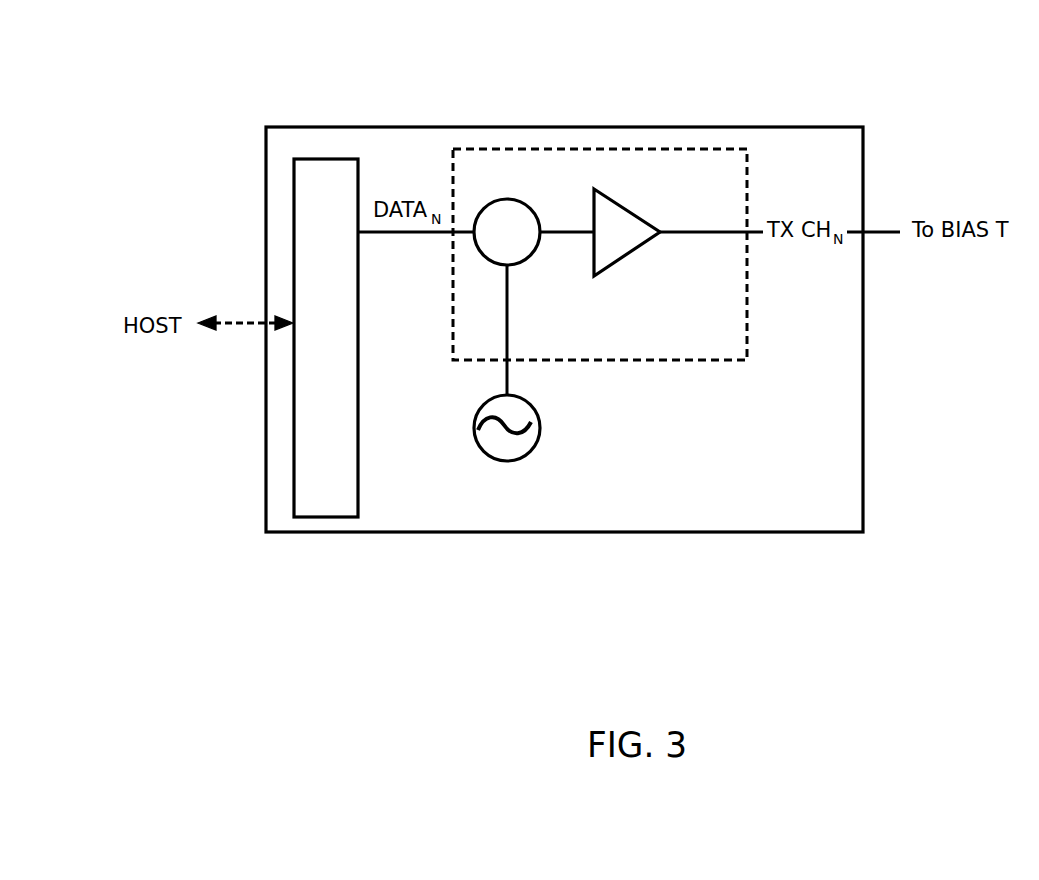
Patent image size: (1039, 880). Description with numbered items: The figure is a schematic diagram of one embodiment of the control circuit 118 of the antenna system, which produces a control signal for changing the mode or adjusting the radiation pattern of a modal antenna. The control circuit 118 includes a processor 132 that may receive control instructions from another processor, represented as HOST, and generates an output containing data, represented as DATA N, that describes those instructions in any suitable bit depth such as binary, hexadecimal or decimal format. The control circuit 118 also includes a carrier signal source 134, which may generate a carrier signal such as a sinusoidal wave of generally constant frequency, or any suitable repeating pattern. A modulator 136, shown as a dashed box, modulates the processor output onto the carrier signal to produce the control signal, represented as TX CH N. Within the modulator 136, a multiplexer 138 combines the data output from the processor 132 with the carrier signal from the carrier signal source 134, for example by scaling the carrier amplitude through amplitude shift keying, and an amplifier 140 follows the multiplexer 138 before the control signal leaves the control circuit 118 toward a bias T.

The control circuit 118 is at (292, 126).
The processor 132 is at (326, 338).
The carrier signal source 134 is at (538, 445).
The modulator 136 is at (484, 149).
The multiplexer 138 is at (506, 199).
The amplifier 140 is at (651, 232).